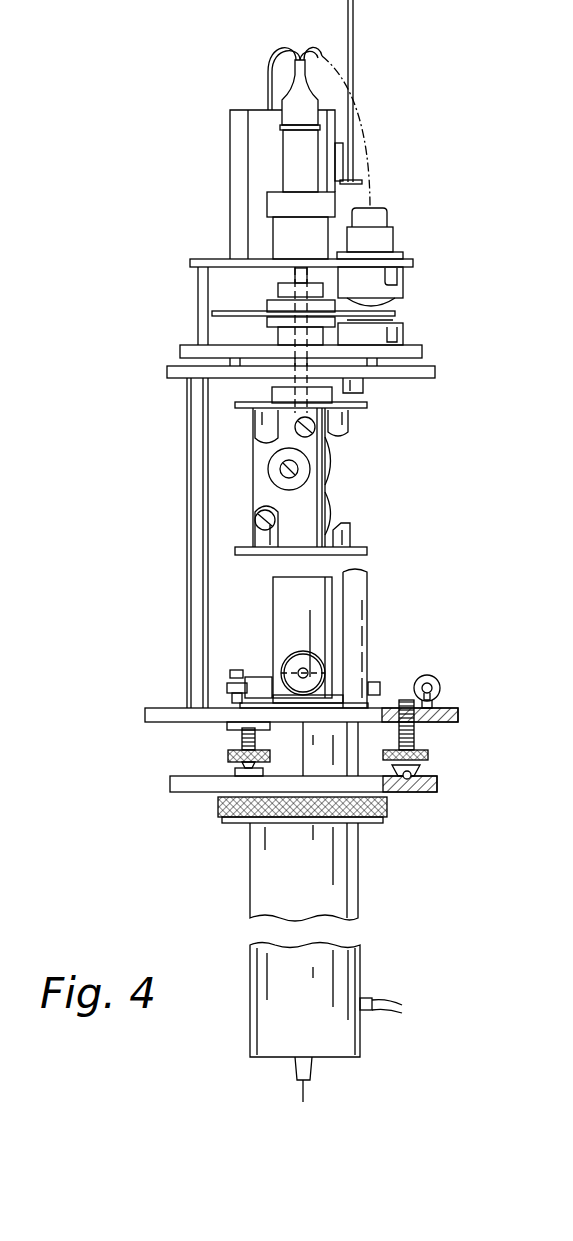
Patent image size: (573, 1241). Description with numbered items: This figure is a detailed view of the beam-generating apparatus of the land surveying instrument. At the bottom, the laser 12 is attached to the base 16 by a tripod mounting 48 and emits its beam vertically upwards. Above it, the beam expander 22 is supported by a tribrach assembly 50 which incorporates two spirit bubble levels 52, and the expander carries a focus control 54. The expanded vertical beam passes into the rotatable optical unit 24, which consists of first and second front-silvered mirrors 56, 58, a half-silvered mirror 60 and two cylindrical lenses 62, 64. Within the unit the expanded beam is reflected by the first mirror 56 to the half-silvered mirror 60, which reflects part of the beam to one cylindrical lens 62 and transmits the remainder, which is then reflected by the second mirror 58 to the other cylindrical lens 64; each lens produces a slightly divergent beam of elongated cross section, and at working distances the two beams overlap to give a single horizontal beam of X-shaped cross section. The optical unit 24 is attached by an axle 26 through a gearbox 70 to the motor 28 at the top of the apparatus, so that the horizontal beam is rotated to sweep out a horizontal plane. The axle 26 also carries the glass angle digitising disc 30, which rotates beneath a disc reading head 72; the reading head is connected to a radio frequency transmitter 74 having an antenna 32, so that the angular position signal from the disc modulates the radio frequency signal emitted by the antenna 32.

The laser 12 is at (374, 963).
The base 16 is at (162, 723).
The beam expander 22 is at (287, 594).
The rotatable optical unit 24 is at (246, 489).
The axle 26 is at (300, 277).
The motor 28 is at (287, 100).
The digitiser disc 30 is at (224, 306).
The radio antenna 32 is at (354, 40).
The tripod mounting 48 is at (218, 805).
The tribrach assembly 50 is at (463, 743).
The spirit bubble levels 52 is at (260, 680).
The focus control 54 is at (290, 660).
The first front-silvered mirror 56 is at (297, 435).
The second front-silvered mirror 58 is at (262, 505).
The half-silvered mirror 60 is at (280, 470).
The cylindrical lens 62 is at (334, 462).
The cylindrical lens 64 is at (335, 515).
The gearbox 70 is at (288, 238).
The disc reading head 72 is at (380, 292).
The radio frequency transmitter 74 is at (345, 160).